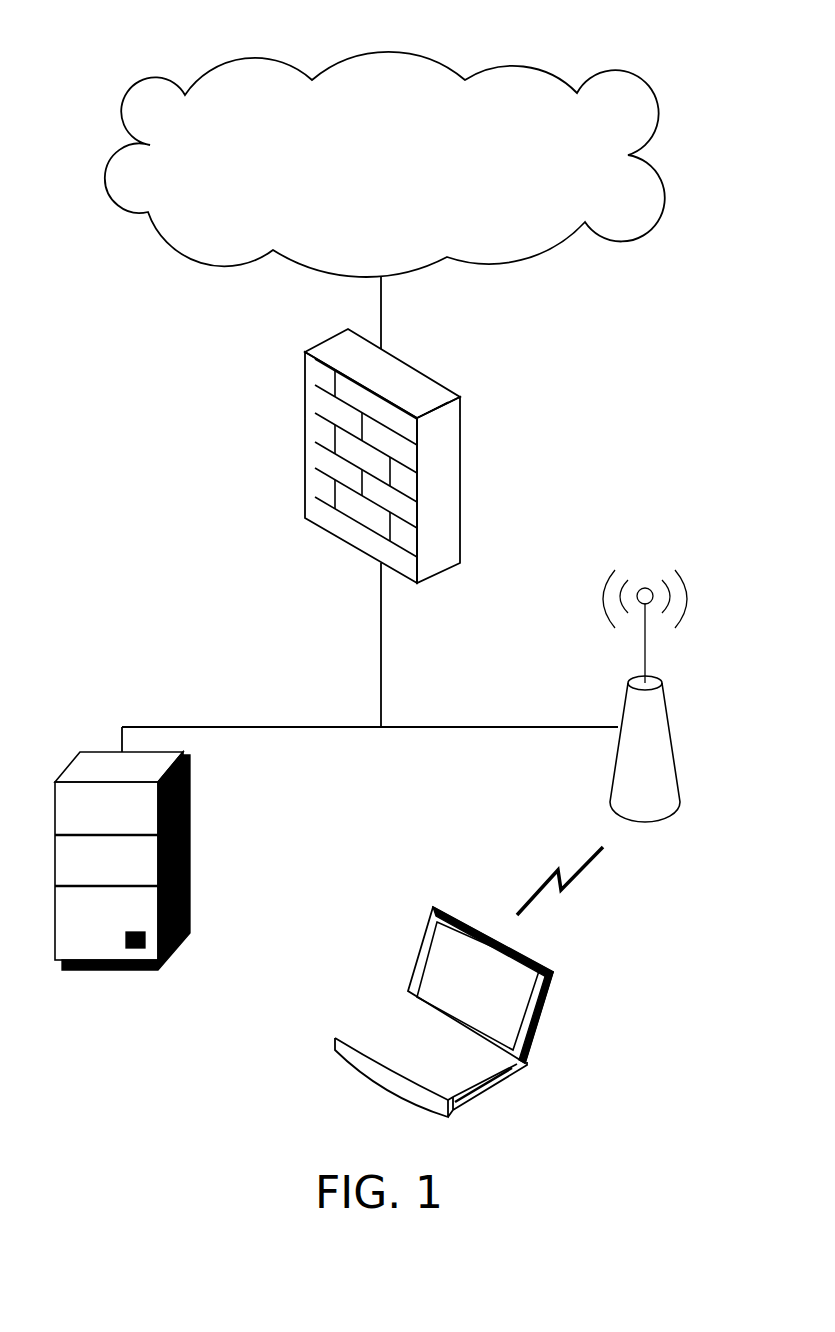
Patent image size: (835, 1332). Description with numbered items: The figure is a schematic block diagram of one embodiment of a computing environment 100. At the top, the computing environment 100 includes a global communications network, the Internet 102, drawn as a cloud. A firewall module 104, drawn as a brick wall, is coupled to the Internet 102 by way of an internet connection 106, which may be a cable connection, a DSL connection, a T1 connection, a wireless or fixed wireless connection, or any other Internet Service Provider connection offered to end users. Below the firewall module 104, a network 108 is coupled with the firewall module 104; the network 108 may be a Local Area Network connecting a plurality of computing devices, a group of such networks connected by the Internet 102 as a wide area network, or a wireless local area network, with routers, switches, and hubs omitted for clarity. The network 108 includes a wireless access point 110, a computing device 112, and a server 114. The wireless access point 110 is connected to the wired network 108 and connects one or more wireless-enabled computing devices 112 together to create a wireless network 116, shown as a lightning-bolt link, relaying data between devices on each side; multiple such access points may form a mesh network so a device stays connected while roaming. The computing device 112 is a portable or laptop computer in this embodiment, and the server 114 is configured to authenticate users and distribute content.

The computing environment 100 is at (92, 67).
The Internet 102 is at (399, 177).
The firewall module 104 is at (460, 477).
The internet connection 106 is at (382, 307).
The network 108 is at (463, 727).
The wireless access point 110 is at (672, 748).
The computing device 112 is at (555, 987).
The server 114 is at (190, 840).
The wireless network 116 is at (565, 880).